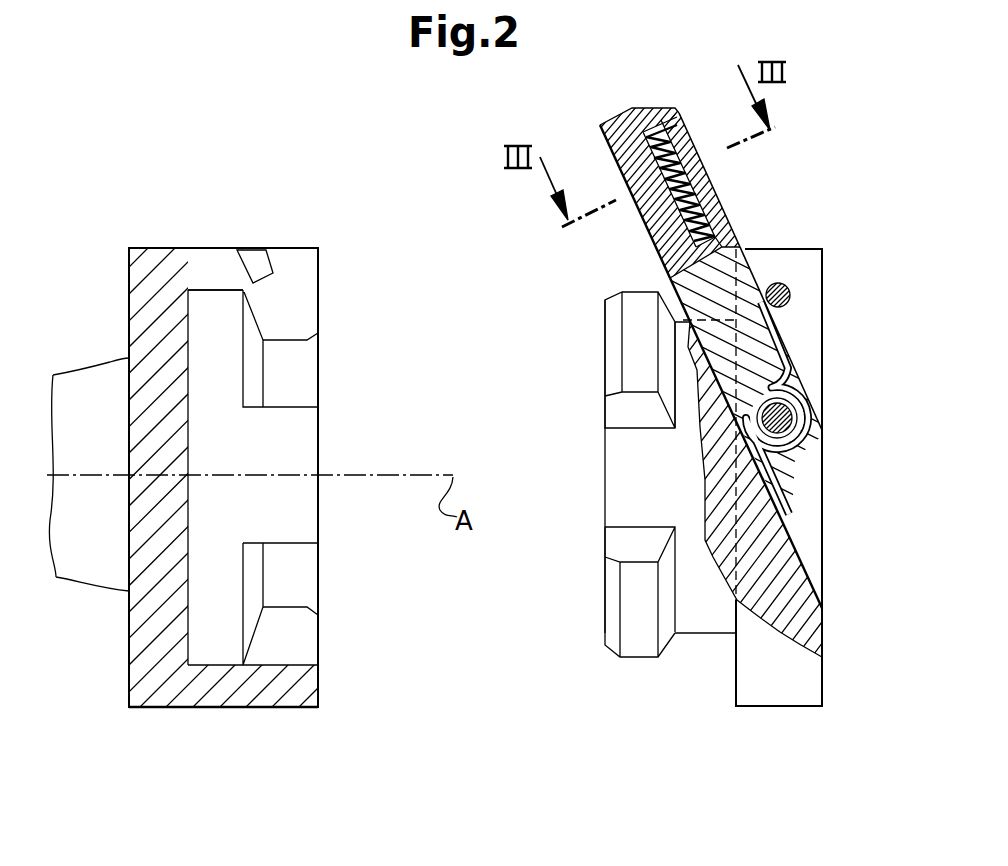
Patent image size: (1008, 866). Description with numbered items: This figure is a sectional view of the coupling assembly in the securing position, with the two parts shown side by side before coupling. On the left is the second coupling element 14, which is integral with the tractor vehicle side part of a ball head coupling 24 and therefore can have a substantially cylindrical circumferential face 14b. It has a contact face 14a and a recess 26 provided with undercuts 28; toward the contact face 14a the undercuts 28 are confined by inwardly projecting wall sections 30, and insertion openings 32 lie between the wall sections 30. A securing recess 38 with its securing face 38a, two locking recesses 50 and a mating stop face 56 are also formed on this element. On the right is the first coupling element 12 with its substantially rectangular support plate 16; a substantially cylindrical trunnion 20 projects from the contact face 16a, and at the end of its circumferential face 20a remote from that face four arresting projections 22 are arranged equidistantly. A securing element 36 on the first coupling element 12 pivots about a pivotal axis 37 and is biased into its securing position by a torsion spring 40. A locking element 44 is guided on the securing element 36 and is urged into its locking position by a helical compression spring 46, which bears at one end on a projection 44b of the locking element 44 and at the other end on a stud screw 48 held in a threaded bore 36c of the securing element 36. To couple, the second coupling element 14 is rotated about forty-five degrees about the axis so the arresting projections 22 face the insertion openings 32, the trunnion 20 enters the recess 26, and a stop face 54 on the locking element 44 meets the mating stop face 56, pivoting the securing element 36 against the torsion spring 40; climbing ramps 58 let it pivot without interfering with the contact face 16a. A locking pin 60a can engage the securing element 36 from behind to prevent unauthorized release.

The coupling element 12 is at (831, 231).
The second coupling element 14 is at (150, 243).
The contact face 14a is at (319, 277).
The cylindrical circumferential face 14b is at (183, 708).
The support plate 16 is at (787, 697).
The contact face 16a is at (737, 679).
The trunnion 20 is at (677, 463).
The circumferential face 20a is at (705, 637).
The arresting projections 22 is at (628, 323).
The ball head coupling 24 is at (83, 553).
The recess 26 is at (220, 582).
The undercuts 28 is at (253, 353).
The wall sections 30 is at (312, 397).
The insertion openings 32 is at (300, 507).
The securing element 36 is at (726, 208).
The threaded bore 36c is at (723, 150).
The pivotal axis 37 is at (790, 410).
The securing recess 38 is at (303, 255).
The securing face 38a is at (222, 262).
The torsion spring 40 is at (790, 443).
The locking element 44 is at (602, 122).
The projection 44b is at (729, 234).
The helical compression spring 46 is at (660, 165).
The stud screw 48 is at (679, 108).
The locking recesses 50 is at (253, 255).
The stop face 54 is at (657, 253).
The mating stop face 56 is at (320, 310).
The climbing ramps 58 is at (747, 250).
The locking pin 60a is at (790, 296).